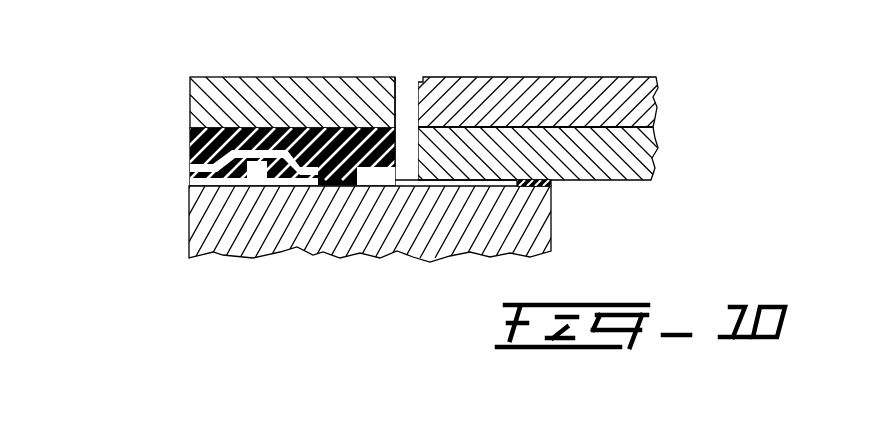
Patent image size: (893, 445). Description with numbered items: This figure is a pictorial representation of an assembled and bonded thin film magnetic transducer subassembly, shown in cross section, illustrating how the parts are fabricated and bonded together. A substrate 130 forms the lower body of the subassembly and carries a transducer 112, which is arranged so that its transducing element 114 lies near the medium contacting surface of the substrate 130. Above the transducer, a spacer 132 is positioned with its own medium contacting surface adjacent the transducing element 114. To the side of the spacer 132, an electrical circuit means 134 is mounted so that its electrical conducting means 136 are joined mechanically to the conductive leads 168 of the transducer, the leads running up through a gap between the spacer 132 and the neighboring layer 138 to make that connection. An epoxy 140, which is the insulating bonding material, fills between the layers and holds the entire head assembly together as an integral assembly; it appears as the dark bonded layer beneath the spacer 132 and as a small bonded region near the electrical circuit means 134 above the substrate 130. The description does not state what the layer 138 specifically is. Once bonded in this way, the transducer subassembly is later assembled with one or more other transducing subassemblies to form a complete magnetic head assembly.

The transducer 112 is at (184, 178).
The transducing element 114 is at (190, 183).
The substrate 130 is at (540, 240).
The spacer 132 is at (212, 77).
The electrical circuit means 134 is at (652, 128).
The electrical conducting means 136 is at (652, 183).
The upper layer 138 is at (603, 80).
The epoxy 140 is at (190, 134).
The conductive leads 168 is at (407, 178).